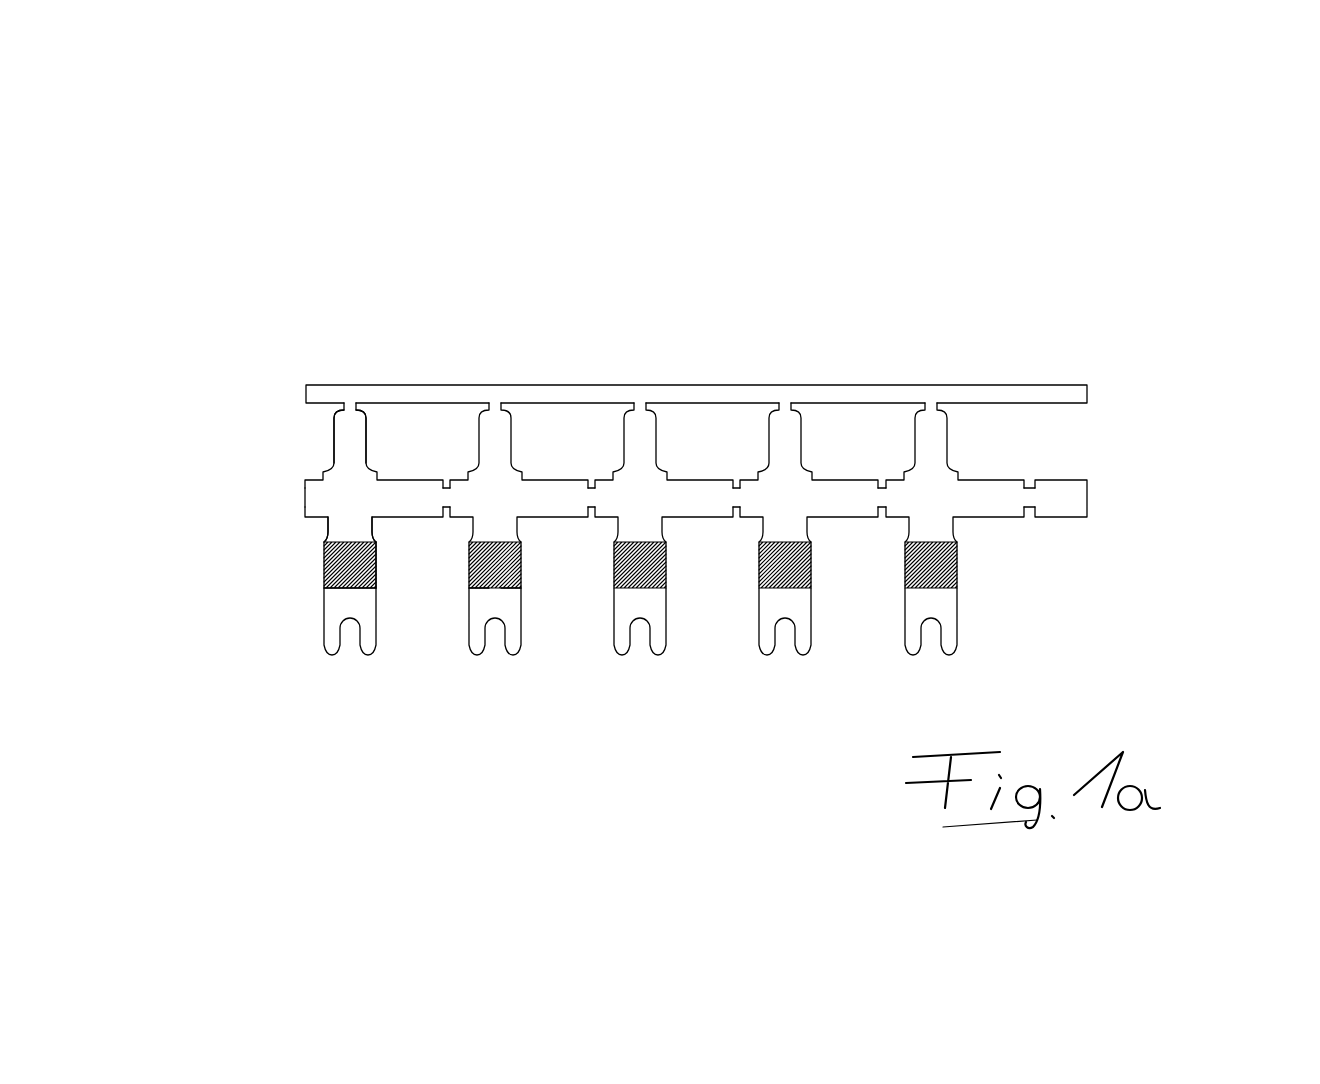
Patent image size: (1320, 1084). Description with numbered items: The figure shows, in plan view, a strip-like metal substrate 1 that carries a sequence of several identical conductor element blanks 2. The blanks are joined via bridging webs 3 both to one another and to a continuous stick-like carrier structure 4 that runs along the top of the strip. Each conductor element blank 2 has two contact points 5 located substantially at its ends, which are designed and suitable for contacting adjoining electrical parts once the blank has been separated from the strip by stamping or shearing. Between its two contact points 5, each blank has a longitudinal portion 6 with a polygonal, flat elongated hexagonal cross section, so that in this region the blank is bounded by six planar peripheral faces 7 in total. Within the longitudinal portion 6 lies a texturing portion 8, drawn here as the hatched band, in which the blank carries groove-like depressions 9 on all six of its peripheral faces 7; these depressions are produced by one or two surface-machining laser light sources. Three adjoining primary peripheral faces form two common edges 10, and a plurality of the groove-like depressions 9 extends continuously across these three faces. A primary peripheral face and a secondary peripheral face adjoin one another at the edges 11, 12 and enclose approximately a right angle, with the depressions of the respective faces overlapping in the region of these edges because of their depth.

The strip-like metal substrate 1 is at (1285, 168).
The conductor element blank 2 is at (624, 540).
The bridging web 3 is at (1032, 263).
The carrier structure 4 is at (802, 242).
The contact point 5 is at (210, 772).
The longitudinal portion 6 is at (304, 530).
The peripheral face 7 is at (362, 594).
The texturing portion 8 is at (287, 552).
The groove-like depression 9 is at (402, 760).
The common edge 10 is at (1085, 660).
The edge 11 is at (483, 825).
The edge 12 is at (551, 719).